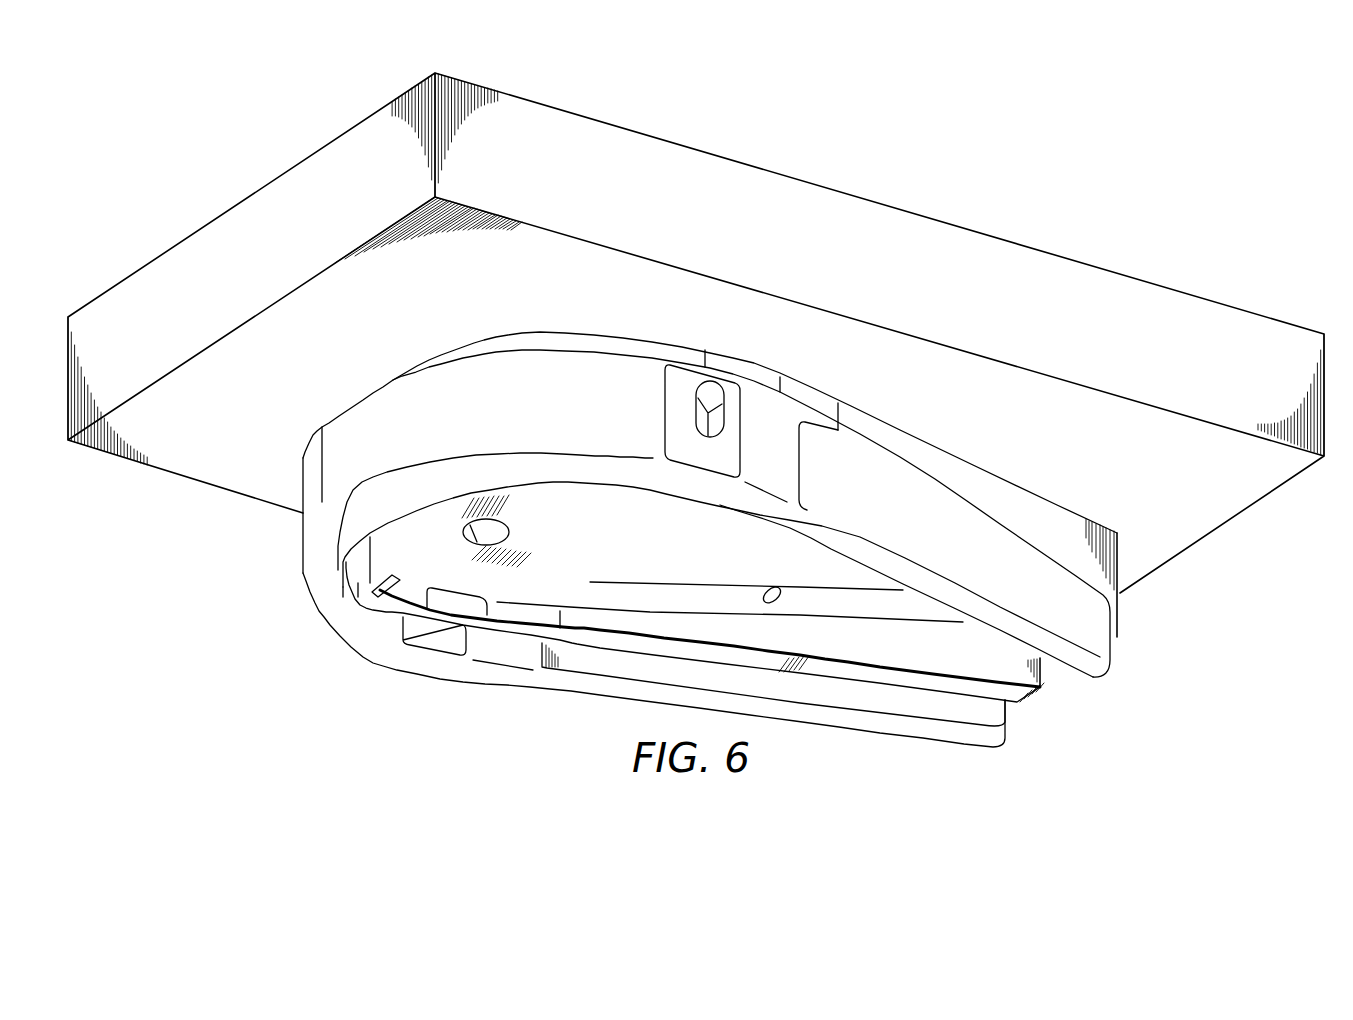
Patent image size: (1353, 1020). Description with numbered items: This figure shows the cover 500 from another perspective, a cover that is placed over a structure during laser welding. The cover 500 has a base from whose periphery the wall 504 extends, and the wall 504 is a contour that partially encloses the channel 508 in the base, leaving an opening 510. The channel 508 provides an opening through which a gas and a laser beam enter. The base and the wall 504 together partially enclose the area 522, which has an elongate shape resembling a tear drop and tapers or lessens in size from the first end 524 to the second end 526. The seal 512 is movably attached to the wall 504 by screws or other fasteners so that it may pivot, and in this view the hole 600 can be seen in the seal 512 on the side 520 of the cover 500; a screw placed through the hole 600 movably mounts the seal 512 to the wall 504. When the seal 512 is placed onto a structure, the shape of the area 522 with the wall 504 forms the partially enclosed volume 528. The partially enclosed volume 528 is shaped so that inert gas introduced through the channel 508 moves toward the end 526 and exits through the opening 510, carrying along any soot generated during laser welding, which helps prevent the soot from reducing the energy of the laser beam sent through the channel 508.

The cover 500 is at (400, 722).
The wall 504 is at (958, 640).
The channel 508 is at (511, 530).
The opening 510 is at (1042, 673).
The seal 512 is at (552, 692).
The side 520 is at (953, 547).
The area 522 is at (684, 555).
The end 524 is at (403, 518).
The end 526 is at (1117, 613).
The partially enclosed volume 528 is at (766, 559).
The hole 600 is at (695, 422).